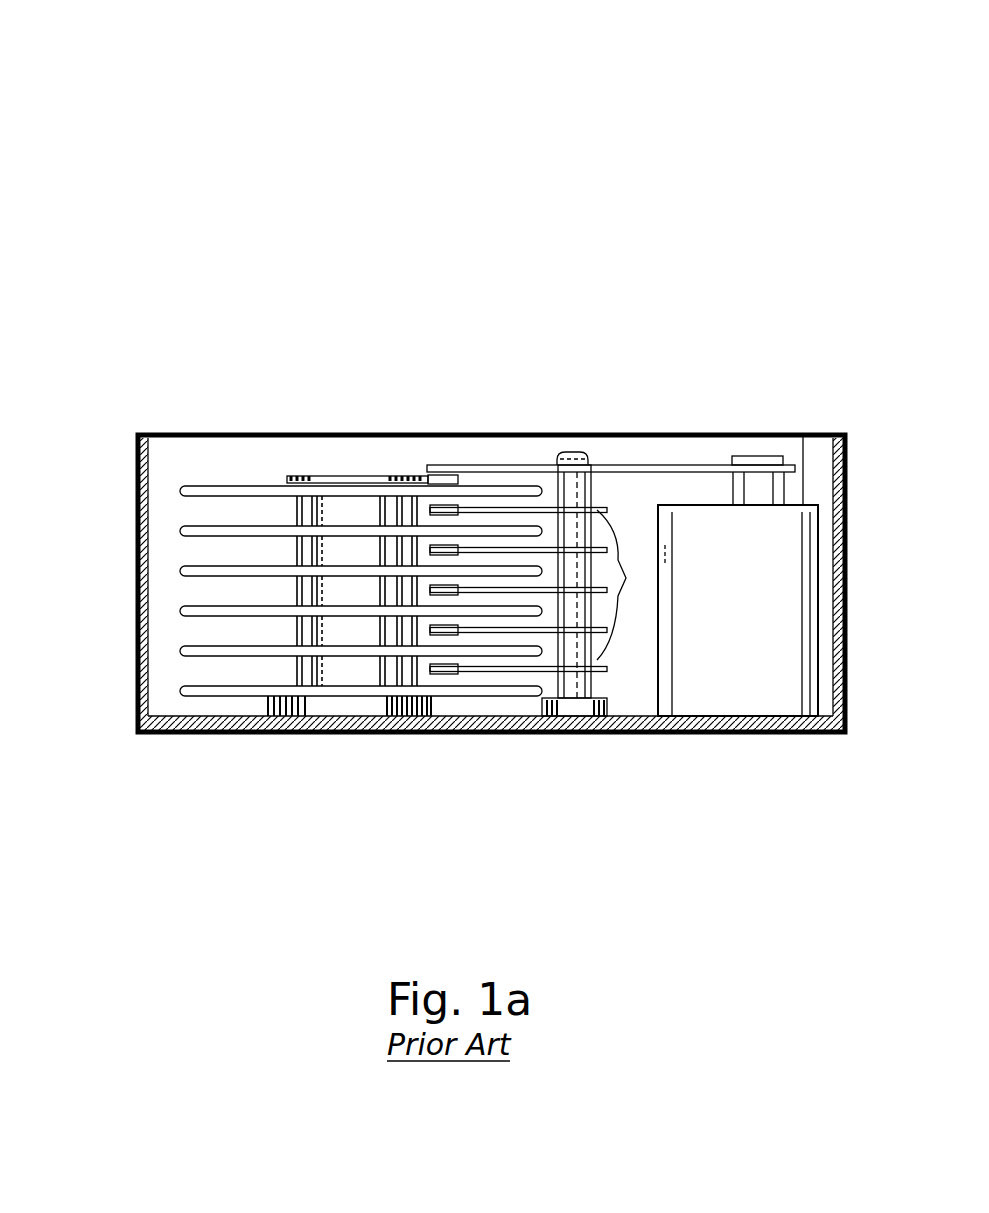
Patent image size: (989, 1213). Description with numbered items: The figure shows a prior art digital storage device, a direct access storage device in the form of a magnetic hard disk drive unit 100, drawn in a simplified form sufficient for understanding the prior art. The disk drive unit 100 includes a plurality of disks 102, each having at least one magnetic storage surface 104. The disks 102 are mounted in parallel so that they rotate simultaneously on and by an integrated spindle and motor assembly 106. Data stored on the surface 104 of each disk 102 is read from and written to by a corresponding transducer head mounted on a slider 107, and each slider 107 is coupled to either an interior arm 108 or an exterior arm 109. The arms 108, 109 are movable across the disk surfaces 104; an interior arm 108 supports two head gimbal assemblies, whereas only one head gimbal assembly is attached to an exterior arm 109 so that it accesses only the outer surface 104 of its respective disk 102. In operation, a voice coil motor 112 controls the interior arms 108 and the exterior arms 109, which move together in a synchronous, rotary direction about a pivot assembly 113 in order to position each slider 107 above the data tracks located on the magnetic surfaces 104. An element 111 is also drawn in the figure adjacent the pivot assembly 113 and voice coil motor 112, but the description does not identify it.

The magnetic hard disk drive unit 100 is at (90, 82).
The disks 102 is at (180, 491).
The magnetic storage surface 104 is at (207, 485).
The integrated spindle and motor assembly 106 is at (358, 476).
The slider 107 is at (430, 550).
The interior arm 108 is at (631, 585).
The exterior arm 109 is at (507, 465).
The support plate 111 is at (678, 465).
The voice coil motor 112 is at (728, 683).
The pivot assembly 113 is at (586, 452).